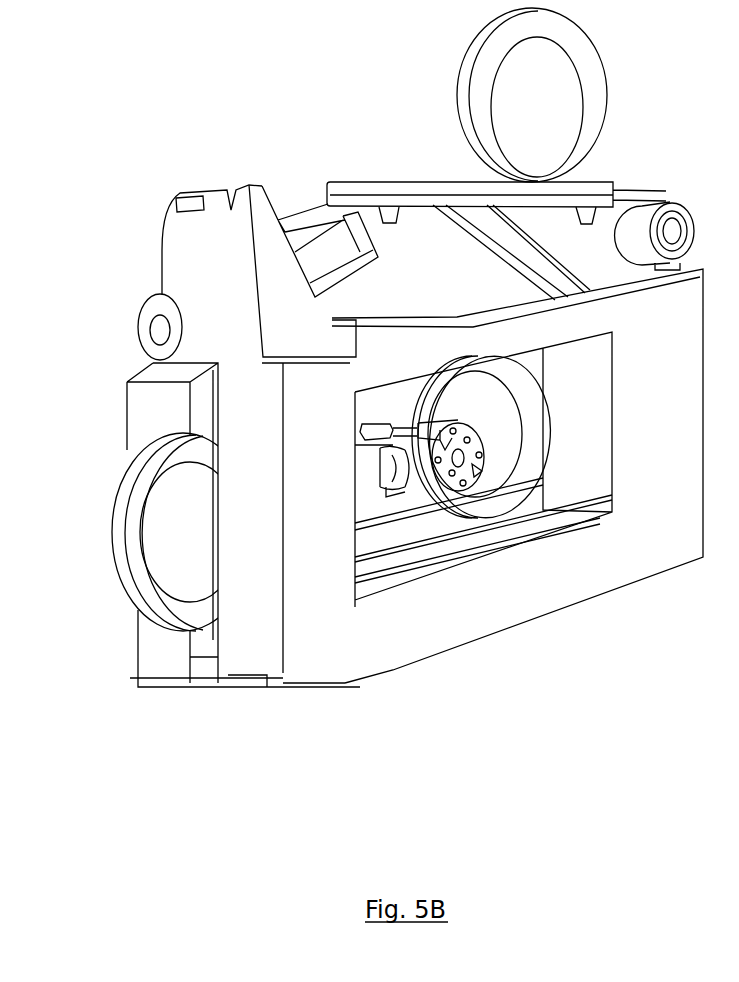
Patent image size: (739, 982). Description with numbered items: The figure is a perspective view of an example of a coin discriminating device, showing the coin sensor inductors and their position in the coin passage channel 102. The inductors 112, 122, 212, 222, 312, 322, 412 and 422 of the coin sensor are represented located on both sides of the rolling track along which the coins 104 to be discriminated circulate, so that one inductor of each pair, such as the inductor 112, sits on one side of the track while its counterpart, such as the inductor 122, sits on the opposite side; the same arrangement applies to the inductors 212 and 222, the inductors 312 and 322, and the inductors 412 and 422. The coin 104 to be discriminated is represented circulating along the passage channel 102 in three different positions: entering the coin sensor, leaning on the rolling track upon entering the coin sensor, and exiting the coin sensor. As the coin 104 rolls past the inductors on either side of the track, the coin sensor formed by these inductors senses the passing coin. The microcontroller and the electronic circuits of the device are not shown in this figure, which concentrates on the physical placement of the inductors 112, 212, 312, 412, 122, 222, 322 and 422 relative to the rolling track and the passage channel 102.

The passage channel 102 is at (205, 413).
The coin 104 is at (575, 103).
The inductor 112 is at (409, 616).
The inductor 212 is at (409, 616).
The inductor 312 is at (409, 616).
The inductor 412 is at (373, 483).
The inductor 122 is at (495, 600).
The inductor 222 is at (495, 600).
The inductor 322 is at (495, 600).
The inductor 422 is at (463, 500).